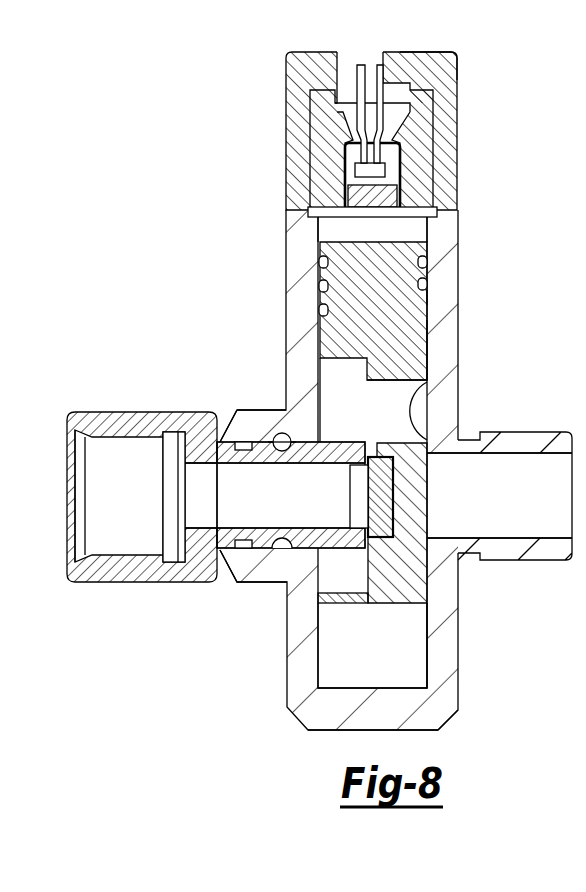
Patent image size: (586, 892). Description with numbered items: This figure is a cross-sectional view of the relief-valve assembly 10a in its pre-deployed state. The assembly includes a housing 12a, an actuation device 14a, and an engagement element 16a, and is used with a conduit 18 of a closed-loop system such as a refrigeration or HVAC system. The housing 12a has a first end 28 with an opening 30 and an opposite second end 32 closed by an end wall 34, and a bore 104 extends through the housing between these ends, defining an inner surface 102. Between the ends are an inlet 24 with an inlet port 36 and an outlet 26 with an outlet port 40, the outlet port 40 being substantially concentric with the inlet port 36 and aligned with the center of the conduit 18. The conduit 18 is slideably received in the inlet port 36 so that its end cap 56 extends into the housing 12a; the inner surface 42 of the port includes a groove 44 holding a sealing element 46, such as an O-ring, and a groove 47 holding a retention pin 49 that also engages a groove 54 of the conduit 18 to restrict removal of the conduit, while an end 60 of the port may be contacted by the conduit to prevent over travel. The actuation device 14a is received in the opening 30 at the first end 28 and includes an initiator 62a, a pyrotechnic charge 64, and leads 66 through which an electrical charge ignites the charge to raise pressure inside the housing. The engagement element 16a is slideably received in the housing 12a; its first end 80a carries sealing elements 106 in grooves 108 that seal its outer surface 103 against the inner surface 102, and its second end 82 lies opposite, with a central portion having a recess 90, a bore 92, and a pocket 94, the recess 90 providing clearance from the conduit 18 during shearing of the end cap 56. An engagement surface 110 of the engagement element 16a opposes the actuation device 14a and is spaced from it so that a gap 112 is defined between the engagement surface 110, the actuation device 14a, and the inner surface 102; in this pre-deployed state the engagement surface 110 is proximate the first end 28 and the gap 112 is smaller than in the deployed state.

The relief-valve assembly 10a is at (203, 121).
The housing 12a is at (458, 350).
The actuation device 14a is at (427, 160).
The engagement element 16a is at (404, 335).
The conduit 18 is at (139, 407).
The inlet 24 is at (322, 442).
The outlet 26 is at (516, 454).
The first end 28 is at (465, 104).
The opening 30 is at (442, 53).
The second end 32 is at (318, 731).
The end wall 34 is at (420, 706).
The inlet port 36 is at (279, 408).
The outlet port 40 is at (540, 437).
The inner surface 42 is at (258, 447).
The groove 44 is at (237, 440).
The sealing element 46 is at (240, 551).
The groove 47 is at (277, 440).
The retention pin 49 is at (282, 451).
The groove 54 is at (283, 551).
The end cap 56 is at (372, 486).
The end 60 is at (222, 432).
The initiator 62a is at (341, 153).
The pyrotechnic charge 64 is at (343, 192).
The leads 66 is at (379, 65).
The first end 80a is at (384, 261).
The second end 82 is at (340, 604).
The recess 90 is at (353, 582).
The bore 92 is at (410, 412).
The pocket 94 is at (384, 460).
The inner surface 102 is at (320, 309).
The outer surface 103 is at (428, 297).
The bore 104 is at (352, 677).
The sealing element 106 is at (428, 284).
The groove 108 is at (320, 285).
The engagement surface 110 is at (306, 208).
The gap 112 is at (403, 232).